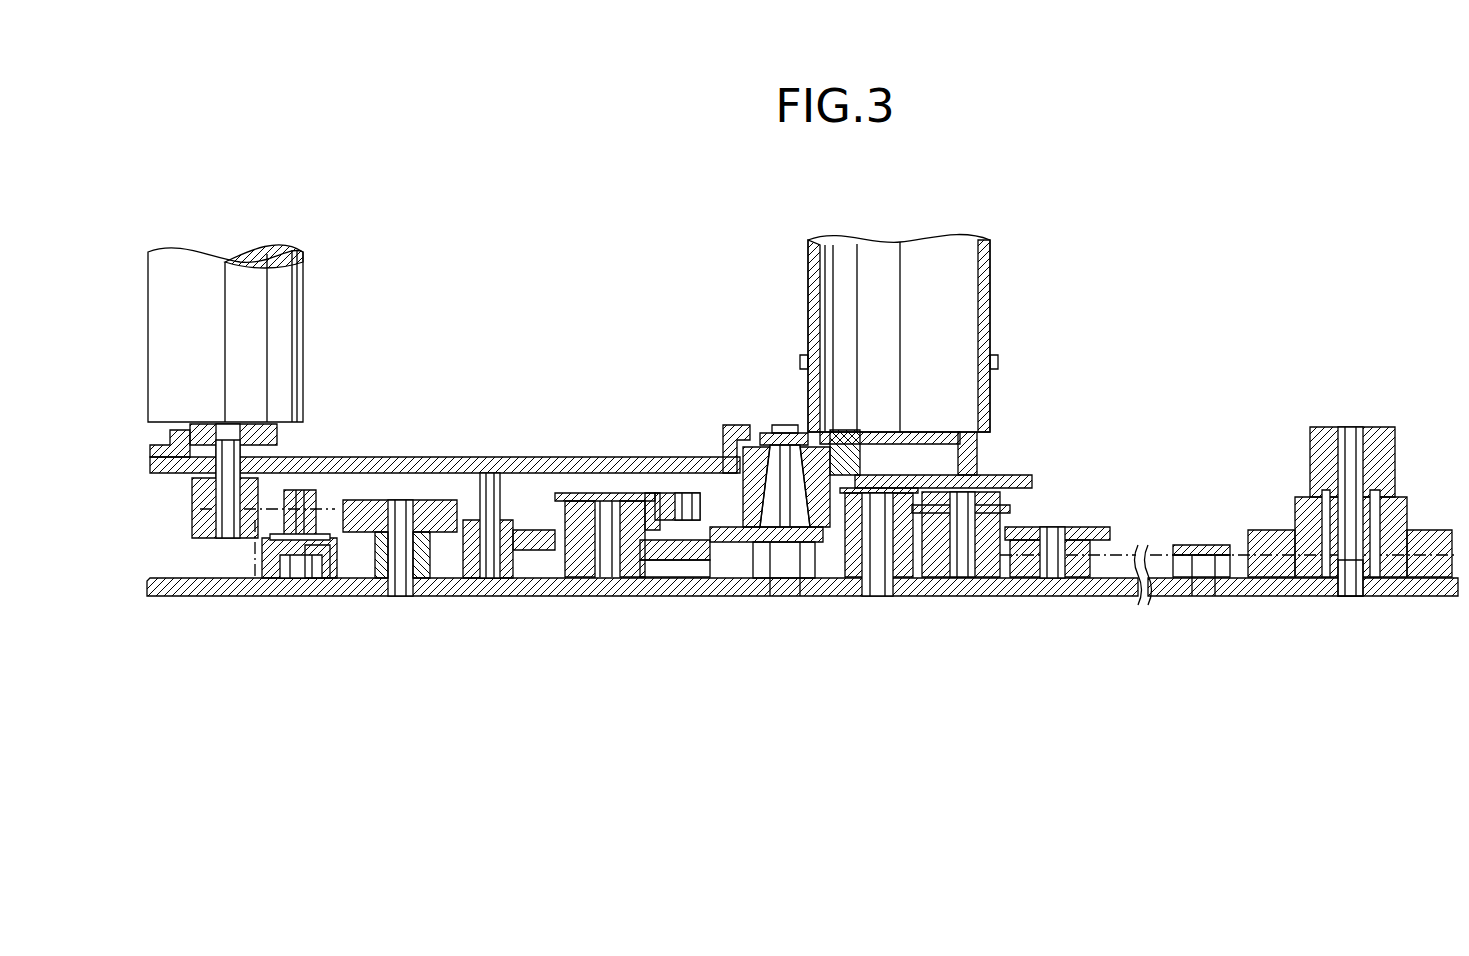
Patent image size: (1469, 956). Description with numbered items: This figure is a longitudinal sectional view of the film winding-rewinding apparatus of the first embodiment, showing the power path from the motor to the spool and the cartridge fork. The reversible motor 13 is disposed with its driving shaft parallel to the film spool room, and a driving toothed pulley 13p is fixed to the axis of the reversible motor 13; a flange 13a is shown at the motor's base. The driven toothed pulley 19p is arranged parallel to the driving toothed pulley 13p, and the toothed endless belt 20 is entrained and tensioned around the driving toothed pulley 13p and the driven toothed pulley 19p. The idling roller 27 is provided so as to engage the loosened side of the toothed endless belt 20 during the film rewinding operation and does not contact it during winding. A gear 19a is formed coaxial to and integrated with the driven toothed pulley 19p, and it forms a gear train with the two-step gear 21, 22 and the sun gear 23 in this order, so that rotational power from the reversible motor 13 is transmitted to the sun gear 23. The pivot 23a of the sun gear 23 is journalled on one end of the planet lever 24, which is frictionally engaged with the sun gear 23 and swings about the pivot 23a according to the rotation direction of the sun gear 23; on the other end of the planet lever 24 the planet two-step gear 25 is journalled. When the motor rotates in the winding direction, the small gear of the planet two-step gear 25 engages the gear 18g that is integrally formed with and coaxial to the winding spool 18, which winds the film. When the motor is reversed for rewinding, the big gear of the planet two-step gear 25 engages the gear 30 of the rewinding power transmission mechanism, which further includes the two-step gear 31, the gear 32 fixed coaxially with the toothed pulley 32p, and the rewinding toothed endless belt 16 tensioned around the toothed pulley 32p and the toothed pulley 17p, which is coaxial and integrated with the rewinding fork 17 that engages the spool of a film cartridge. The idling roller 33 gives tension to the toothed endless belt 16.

The reversible motor 13 is at (293, 358).
The flange 13a is at (270, 446).
The driving toothed pulley 13p is at (200, 520).
The rewinding toothed endless belt 16 is at (1158, 597).
The rewinding fork 17 is at (1369, 427).
The toothed pulley 17p is at (1296, 597).
The winding spool 18 is at (990, 288).
The gear 18g is at (978, 450).
The gear 19a is at (385, 600).
The driven toothed pulley 19p is at (367, 596).
The toothed endless belt 20 is at (267, 598).
The two-step gear 21 is at (472, 598).
The two-step gear 22 is at (560, 598).
The sun gear 23 is at (656, 506).
The pivot 23a is at (666, 596).
The planet lever 24 is at (725, 596).
The planet two-step gear 25 is at (760, 407).
The idling roller 27 is at (318, 596).
The gear 30 is at (852, 594).
The two-step gear 31 is at (946, 594).
The gear 32 is at (1082, 527).
The toothed pulley 32p is at (1028, 597).
The idling roller 33 is at (1217, 594).